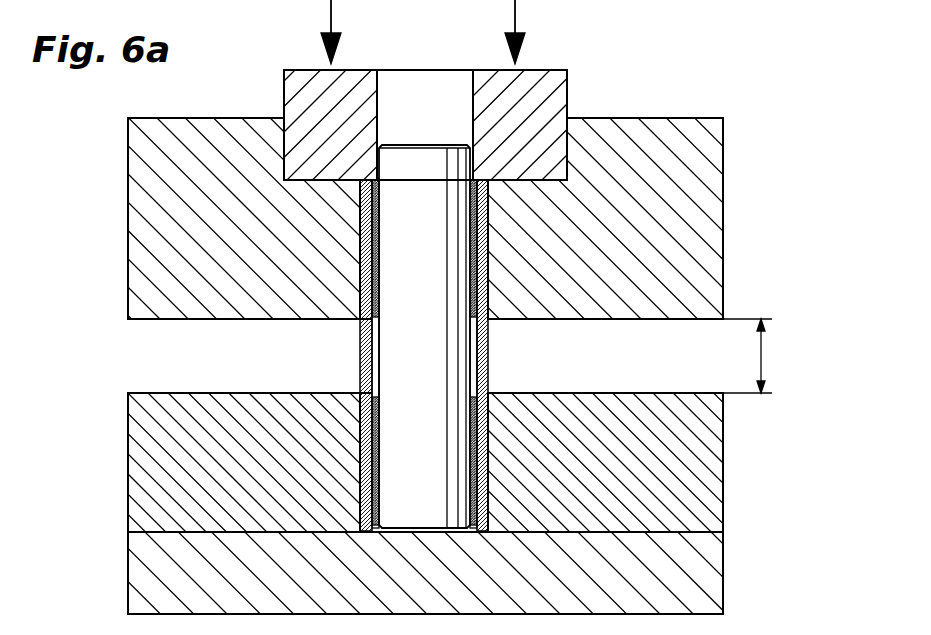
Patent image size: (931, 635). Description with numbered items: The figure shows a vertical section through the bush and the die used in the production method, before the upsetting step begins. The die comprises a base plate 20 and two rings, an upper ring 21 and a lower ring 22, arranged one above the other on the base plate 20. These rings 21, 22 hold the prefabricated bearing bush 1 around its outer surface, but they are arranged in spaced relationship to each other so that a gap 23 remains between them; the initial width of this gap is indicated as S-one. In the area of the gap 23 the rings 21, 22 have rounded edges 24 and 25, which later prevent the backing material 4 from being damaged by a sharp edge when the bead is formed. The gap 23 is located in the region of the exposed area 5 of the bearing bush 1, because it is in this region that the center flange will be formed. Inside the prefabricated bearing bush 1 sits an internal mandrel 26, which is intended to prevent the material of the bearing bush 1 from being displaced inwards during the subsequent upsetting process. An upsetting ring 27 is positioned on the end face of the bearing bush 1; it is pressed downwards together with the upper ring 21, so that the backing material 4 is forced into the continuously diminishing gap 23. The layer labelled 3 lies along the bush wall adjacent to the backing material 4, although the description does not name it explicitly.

The prefabricated bearing bush 1 is at (496, 346).
The outer sleeve 3 is at (487, 380).
The backing material 4 is at (377, 285).
The exposed area 5 is at (376, 373).
The base plate 20 is at (687, 570).
The upper ring 21 is at (693, 200).
The lower ring 22 is at (688, 477).
The gap 23 is at (173, 352).
The rounded edge 24 is at (358, 321).
The rounded edge 25 is at (358, 392).
The internal mandrel 26 is at (430, 182).
The upsetting ring 27 is at (326, 104).